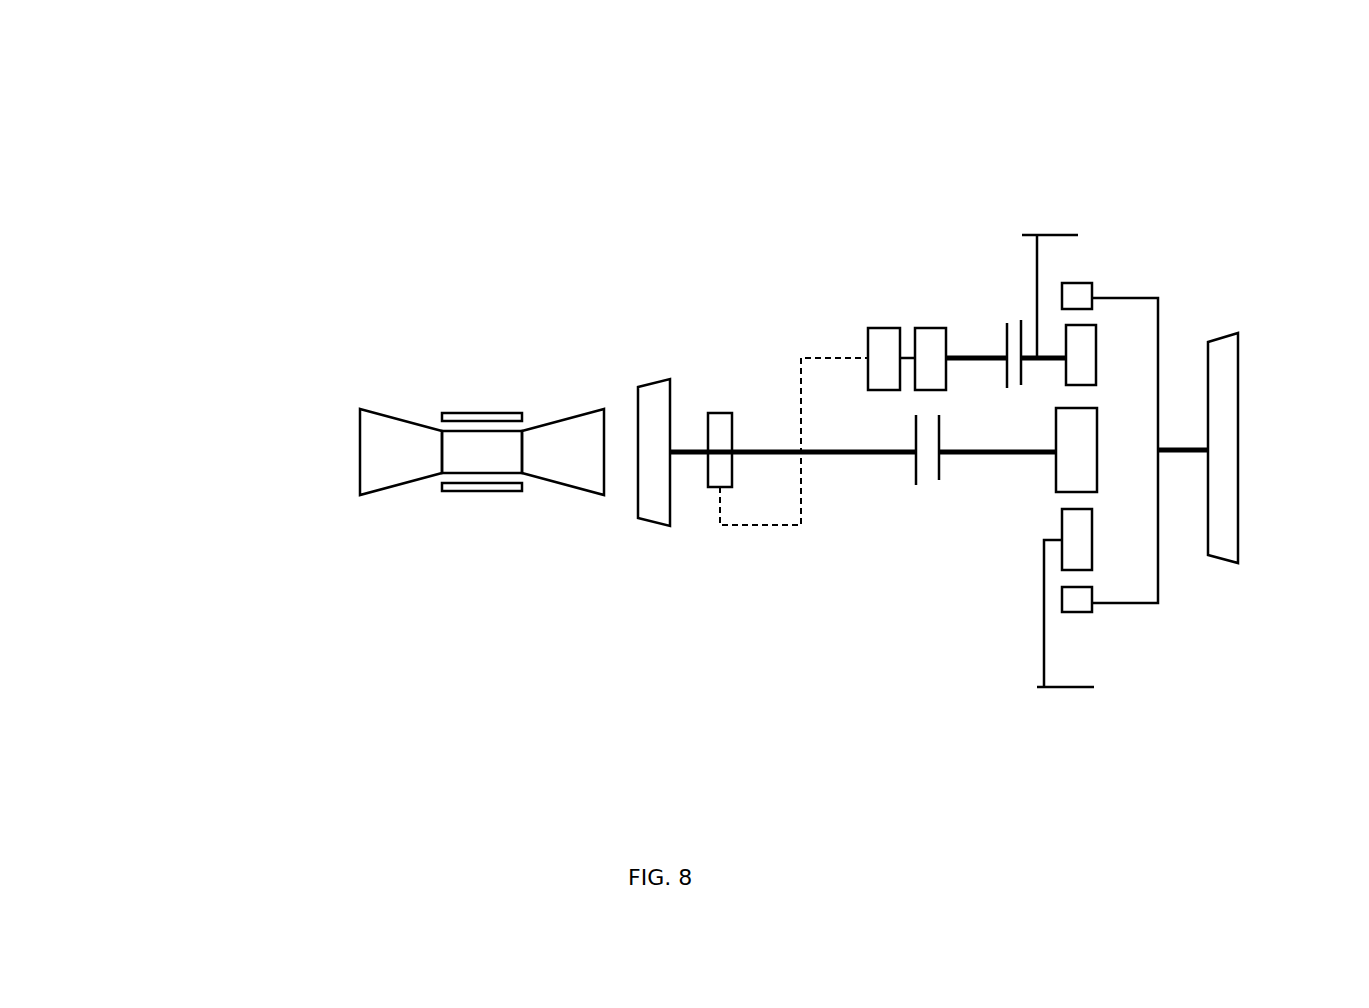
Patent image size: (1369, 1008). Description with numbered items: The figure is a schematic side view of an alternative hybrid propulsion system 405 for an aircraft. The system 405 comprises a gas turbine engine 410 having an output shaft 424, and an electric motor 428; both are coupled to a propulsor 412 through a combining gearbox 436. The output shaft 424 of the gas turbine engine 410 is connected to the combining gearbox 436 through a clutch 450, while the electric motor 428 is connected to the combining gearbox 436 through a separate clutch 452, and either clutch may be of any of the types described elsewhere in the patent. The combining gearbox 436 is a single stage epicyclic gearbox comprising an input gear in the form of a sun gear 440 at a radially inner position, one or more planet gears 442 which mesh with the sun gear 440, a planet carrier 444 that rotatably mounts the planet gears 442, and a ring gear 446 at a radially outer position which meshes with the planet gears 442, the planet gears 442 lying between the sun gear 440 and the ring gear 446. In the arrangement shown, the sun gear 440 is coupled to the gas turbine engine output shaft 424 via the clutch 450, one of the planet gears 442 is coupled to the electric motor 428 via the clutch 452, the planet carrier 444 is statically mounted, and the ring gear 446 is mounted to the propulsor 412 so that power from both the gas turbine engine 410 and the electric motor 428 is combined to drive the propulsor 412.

The hybrid propulsion system 405 is at (285, 292).
The gas turbine engine 410 is at (418, 540).
The output shaft 424 is at (682, 458).
The electric motor 428 is at (927, 328).
The clutch 452 is at (1006, 327).
The clutch 450 is at (916, 485).
The planet gears 442 is at (1093, 357).
The sun gear 440 is at (1097, 448).
The planet carrier 444 is at (1044, 589).
The ring gear 446 is at (1075, 612).
The propulsor 412 is at (1223, 335).
The combining gearbox 436 is at (1144, 702).